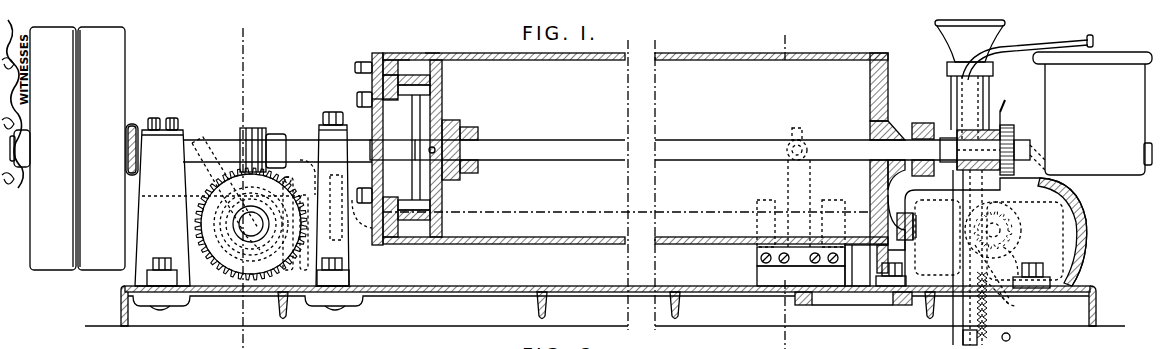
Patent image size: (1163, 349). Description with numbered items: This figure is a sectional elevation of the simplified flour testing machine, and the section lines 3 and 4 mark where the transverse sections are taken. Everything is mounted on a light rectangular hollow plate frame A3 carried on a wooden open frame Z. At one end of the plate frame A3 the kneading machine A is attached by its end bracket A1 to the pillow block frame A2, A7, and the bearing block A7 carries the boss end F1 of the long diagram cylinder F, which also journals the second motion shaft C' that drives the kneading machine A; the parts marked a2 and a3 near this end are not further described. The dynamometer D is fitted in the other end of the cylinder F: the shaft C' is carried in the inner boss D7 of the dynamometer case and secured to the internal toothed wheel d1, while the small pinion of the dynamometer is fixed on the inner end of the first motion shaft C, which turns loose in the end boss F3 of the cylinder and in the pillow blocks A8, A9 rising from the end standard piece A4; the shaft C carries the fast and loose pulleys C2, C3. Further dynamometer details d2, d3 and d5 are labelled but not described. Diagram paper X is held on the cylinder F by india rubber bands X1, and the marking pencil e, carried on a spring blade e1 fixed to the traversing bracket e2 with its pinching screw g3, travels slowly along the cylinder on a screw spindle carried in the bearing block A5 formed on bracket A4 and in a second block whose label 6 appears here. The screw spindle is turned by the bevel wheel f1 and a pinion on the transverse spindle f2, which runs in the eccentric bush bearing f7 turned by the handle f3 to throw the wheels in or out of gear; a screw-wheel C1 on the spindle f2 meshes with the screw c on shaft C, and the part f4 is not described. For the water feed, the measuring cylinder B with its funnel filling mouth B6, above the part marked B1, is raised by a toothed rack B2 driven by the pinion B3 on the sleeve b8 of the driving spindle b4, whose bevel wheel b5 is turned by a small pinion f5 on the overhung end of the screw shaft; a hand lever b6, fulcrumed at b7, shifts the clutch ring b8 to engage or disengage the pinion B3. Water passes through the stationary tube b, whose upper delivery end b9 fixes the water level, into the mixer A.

The loose pulley C3 is at (43, 148).
The fast pulley C2 is at (101, 148).
The pillow block A9 is at (217, 202).
The section line 3 is at (242, 180).
The screw c is at (258, 128).
The first motion shaft C is at (277, 151).
The screw-wheel C1 is at (251, 224).
The transverse spindle f2 is at (251, 224).
The handle f3 is at (222, 160).
The eccentric bush bearing f7 is at (236, 240).
The bevel wheel f1 is at (300, 266).
The pillow block A8 is at (333, 134).
The end boss F3 is at (332, 205).
The bearing block A5 is at (308, 177).
The end standard piece A4 is at (178, 274).
The dynamometer D is at (372, 64).
The diagram cylinder F is at (388, 53).
The india rubber bands X1 is at (400, 53).
The diagram paper X is at (425, 53).
The clutch ring d2 is at (383, 88).
The bolt d3 is at (357, 99).
The internal toothed wheel d1 is at (442, 92).
The inner boss D7 is at (478, 128).
The bracket d5 is at (359, 214).
The second motion shaft C' is at (699, 150).
The plate frame A3 is at (608, 306).
The wooden open frame Z is at (605, 333).
The section line 4 is at (777, 185).
The marking pencil e is at (787, 150).
The spring blade e1 is at (801, 233).
The traversing bracket e2 is at (801, 276).
The bracket f4 is at (845, 240).
The bearing block 6 is at (884, 250).
The boss end F1 is at (893, 118).
The bearing block A7 is at (930, 123).
The funnel filling mouth B6 is at (970, 41).
The measuring cylinder B is at (947, 56).
The feed pipe B1 is at (951, 85).
The upper delivery end b9 is at (1048, 45).
The kneading machine A is at (1092, 113).
The small metal tube b is at (968, 128).
The hand lever b6 is at (1008, 107).
The gear a2 is at (1012, 125).
The collar a3 is at (1022, 140).
The end bracket A1 is at (996, 228).
The bevel wheel b5 is at (1082, 215).
The pillow block frame A2 is at (989, 240).
The small pinion f5 is at (917, 238).
The pinion B3 is at (1000, 222).
The driving spindle b4 is at (995, 232).
The fulcrum b7 is at (1003, 305).
The toothed rack B2 is at (990, 338).
The sleeve clutch ring b8 is at (1030, 341).
The pinching screw g3 is at (920, 320).